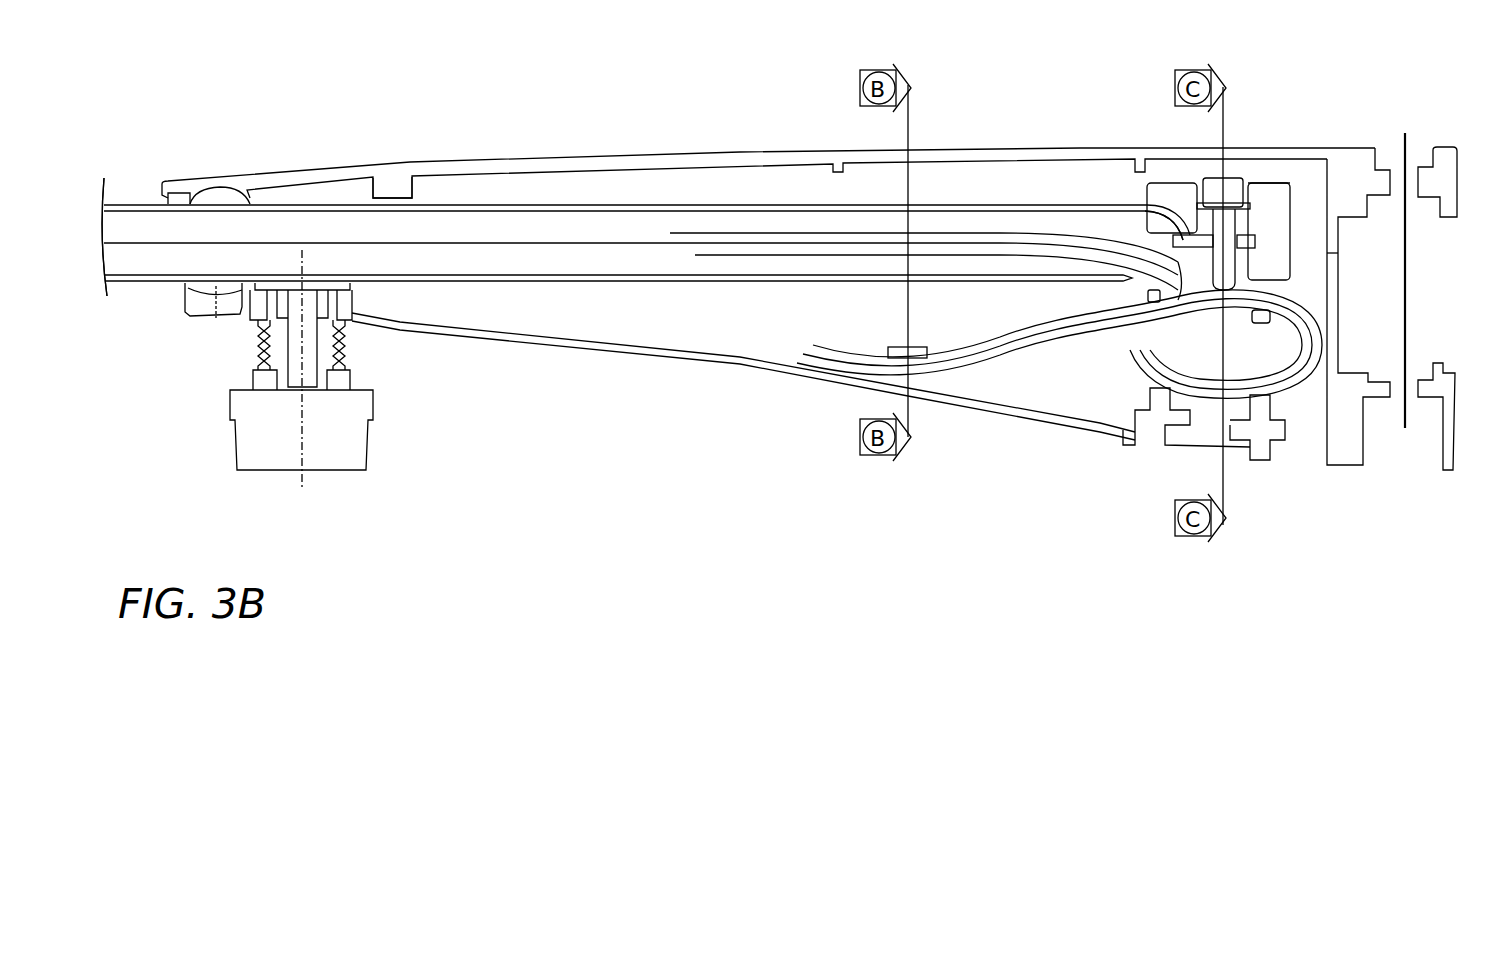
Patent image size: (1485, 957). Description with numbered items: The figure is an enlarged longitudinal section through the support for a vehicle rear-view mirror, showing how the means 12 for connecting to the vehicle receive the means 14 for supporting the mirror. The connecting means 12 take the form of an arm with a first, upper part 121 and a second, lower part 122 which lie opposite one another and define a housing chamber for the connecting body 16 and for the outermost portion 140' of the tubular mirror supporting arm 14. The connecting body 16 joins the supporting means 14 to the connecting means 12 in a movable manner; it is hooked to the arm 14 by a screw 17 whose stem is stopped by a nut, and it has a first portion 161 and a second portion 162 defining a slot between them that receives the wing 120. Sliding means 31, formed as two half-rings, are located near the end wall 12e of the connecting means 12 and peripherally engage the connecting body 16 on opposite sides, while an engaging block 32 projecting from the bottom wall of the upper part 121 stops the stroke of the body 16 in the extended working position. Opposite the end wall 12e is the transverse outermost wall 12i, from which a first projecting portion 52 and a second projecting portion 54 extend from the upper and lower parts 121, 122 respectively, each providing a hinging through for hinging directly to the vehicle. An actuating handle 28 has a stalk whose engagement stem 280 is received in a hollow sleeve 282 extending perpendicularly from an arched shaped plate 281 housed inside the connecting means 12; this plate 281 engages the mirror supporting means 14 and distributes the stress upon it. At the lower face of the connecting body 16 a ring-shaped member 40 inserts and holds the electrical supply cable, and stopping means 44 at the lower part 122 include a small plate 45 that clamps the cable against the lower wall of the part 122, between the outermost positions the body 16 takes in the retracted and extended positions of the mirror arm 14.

The means for connecting to the vehicle 12 is at (812, 125).
The end wall 12e is at (170, 304).
The transverse wall 12i is at (1360, 292).
The means for supporting the rear-view mirror 14 is at (137, 196).
The outermost portion of the mirror supporting means 140' is at (1042, 139).
The connecting means or body 16 is at (1296, 170).
The screw 17 is at (1258, 172).
The actuating means or handle 28 is at (340, 297).
The engagement stem 280 is at (298, 367).
The shaped elongated plate 281 is at (340, 282).
The hollow sleeve 282 is at (327, 310).
The sliding means 31 is at (243, 190).
The engaging block 32 is at (400, 193).
The ring-shaped member 40 is at (1265, 325).
The stopping means for the electrical supply cable 44 is at (932, 365).
The small plate 45 is at (880, 360).
The first projecting portion 52 is at (1388, 153).
The second projecting portion 54 is at (1381, 468).
The wing 120 is at (1190, 232).
The first upper part 121 is at (738, 150).
The second lower part 122 is at (637, 350).
The first portion of the connecting body 161 is at (1190, 210).
The second portion of the connecting body 162 is at (1185, 300).